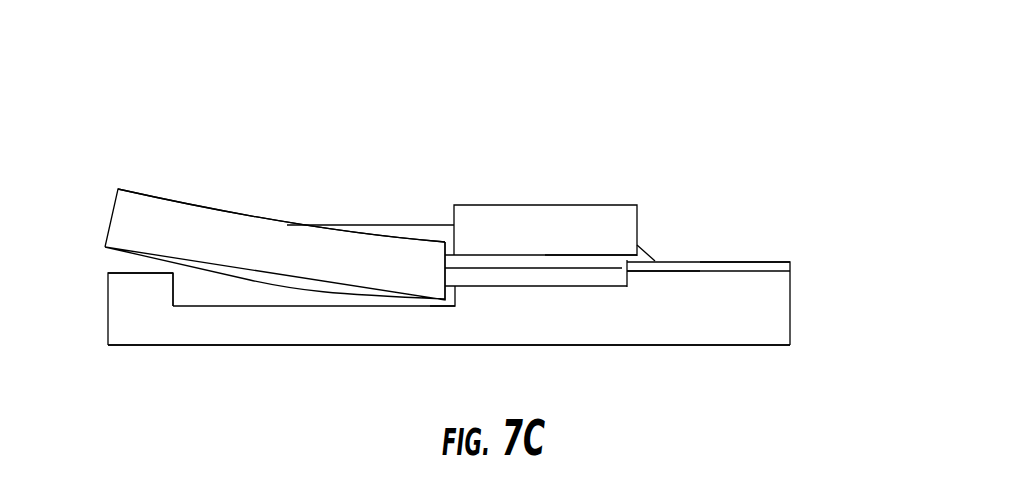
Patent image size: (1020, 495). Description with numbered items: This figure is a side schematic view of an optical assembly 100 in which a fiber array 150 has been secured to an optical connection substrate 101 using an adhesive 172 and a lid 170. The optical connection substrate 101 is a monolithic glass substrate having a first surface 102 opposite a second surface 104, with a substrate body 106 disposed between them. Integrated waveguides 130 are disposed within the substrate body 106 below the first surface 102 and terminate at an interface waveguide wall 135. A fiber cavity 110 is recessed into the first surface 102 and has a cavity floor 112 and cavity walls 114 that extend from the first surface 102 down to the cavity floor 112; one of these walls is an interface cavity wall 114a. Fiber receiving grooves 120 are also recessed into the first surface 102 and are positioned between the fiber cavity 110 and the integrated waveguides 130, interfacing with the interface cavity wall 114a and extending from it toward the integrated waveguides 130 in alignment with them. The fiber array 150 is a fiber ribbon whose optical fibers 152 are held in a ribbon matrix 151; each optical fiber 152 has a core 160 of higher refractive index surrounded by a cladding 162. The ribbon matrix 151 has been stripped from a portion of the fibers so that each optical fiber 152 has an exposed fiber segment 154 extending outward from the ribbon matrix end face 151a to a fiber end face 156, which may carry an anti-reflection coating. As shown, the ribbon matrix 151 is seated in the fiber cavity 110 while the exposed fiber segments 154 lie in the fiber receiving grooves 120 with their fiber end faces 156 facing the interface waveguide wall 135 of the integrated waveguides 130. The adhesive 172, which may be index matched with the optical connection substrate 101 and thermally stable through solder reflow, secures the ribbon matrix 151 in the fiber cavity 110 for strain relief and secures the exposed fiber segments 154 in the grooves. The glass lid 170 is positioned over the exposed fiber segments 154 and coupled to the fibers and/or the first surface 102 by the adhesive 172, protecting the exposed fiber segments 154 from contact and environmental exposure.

The optical assembly 100 is at (655, 185).
The optical connection substrate 101 is at (780, 233).
The first surface 102 is at (112, 272).
The second surface 104 is at (135, 345).
The substrate body 106 is at (132, 297).
The fiber cavity 110 is at (152, 195).
The cavity floor 112 is at (265, 298).
The cavity walls 114 is at (173, 290).
The interface cavity wall 114a is at (444, 297).
The fiber receiving grooves 120 is at (478, 280).
The integrated waveguides 130 is at (725, 270).
The interface waveguide wall 135 is at (626, 279).
The fiber array 150 is at (220, 188).
The ribbon matrix 151 is at (256, 213).
The ribbon matrix end face 151a is at (447, 242).
The optical fibers 152 is at (603, 223).
The exposed fiber segment 154 is at (567, 208).
The fiber end face 156 is at (655, 272).
The core 160 is at (527, 272).
The cladding 162 is at (465, 262).
The lid 170 is at (542, 205).
The adhesive 172 is at (380, 224).